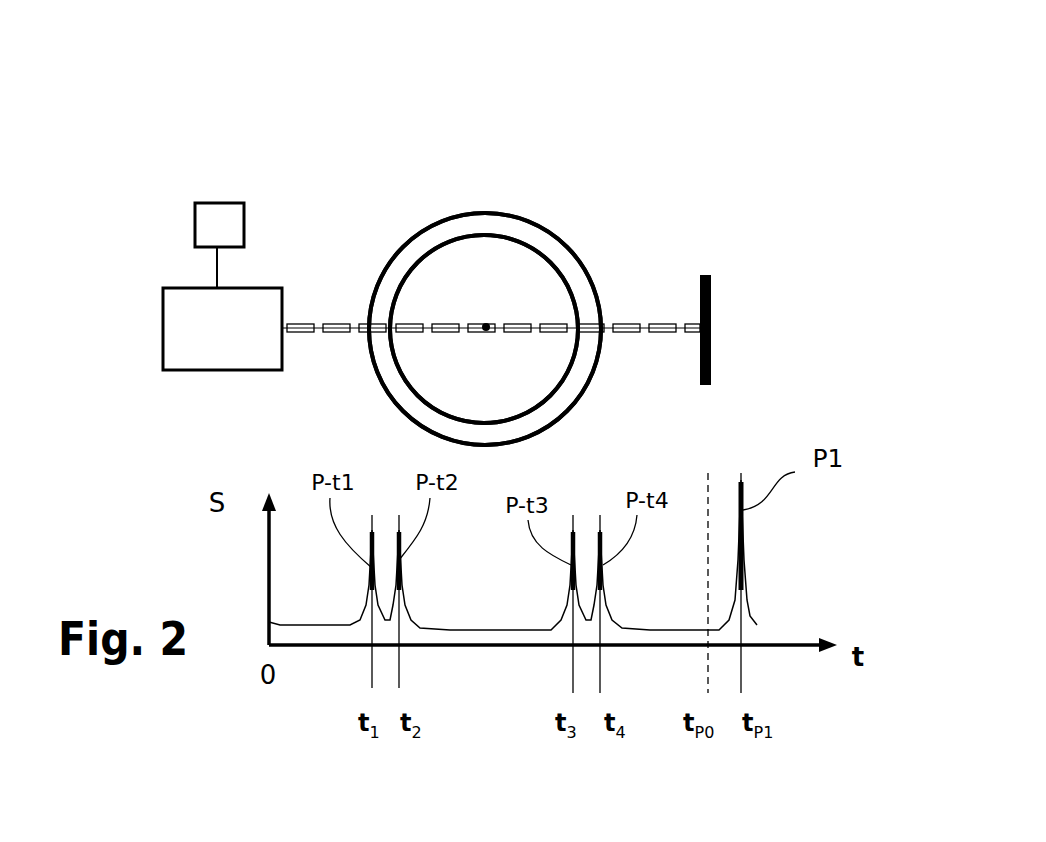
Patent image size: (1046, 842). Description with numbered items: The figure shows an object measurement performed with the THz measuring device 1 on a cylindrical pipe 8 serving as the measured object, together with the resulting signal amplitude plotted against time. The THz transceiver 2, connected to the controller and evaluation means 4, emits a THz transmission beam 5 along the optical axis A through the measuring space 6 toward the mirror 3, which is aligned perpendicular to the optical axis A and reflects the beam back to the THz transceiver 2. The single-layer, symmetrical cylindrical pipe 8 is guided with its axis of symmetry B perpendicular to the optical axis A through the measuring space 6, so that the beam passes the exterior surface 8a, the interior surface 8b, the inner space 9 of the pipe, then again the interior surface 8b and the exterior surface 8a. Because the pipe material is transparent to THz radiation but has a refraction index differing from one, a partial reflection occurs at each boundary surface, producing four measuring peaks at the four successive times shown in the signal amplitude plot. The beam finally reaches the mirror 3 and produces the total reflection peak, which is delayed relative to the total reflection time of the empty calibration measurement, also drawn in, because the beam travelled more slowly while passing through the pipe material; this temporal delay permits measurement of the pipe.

The THz measuring device 1 is at (696, 127).
The THz transceiver 2 is at (165, 370).
The mirror 3 is at (711, 297).
The controller and evaluation means 4 is at (245, 226).
The THz transmission beam 5 is at (300, 326).
The measuring space 6 is at (649, 292).
The cylindrical pipe 8 is at (533, 237).
The exterior surface 8a is at (448, 205).
The interior surface 8b is at (422, 267).
The inner space 9 is at (540, 300).
The optical axis A is at (640, 332).
The axis of symmetry B is at (486, 327).